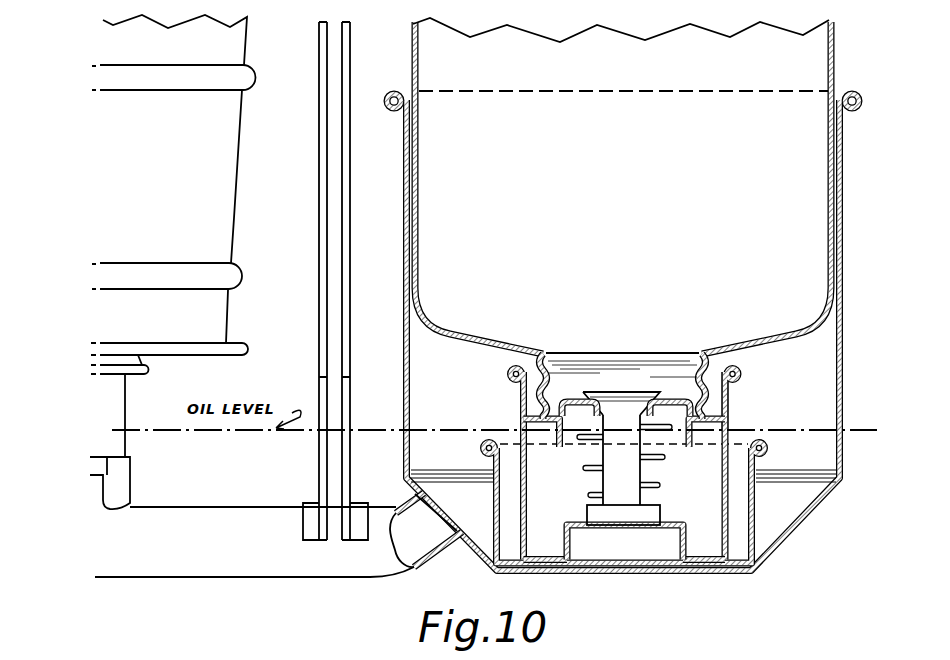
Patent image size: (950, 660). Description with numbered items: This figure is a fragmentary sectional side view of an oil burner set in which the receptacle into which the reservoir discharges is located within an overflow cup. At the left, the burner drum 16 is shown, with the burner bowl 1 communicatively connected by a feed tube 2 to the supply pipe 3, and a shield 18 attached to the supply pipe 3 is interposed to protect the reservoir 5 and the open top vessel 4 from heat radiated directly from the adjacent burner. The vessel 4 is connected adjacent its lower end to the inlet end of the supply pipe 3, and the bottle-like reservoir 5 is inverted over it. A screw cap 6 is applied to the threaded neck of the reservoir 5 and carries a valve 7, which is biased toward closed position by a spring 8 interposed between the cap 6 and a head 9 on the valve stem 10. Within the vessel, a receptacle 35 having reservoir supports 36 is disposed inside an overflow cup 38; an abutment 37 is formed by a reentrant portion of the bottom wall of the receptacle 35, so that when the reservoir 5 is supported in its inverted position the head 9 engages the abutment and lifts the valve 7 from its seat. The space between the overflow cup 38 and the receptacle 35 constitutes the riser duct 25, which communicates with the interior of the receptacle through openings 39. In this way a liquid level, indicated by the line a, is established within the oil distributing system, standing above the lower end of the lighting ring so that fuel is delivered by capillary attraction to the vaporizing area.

The burner bowl 1 is at (117, 402).
The feed tubes 2 is at (124, 481).
The supply pipe 3 is at (254, 542).
The open top vessel 4 is at (843, 256).
The reservoir 5 is at (622, 186).
The screw cap 6 is at (712, 410).
The valve 7 is at (613, 400).
The spring 8 is at (580, 476).
The head 9 is at (622, 522).
The valve stem 10 is at (624, 460).
The drum 16 is at (173, 185).
The shield 18 is at (317, 222).
The riser duct 25 is at (510, 498).
The receptacle 35 is at (729, 402).
The reservoir supports 36 is at (543, 423).
The abutment 37 is at (685, 522).
The overflow cup 38 is at (755, 524).
The openings 39 is at (530, 552).
The liquid level a is at (866, 431).